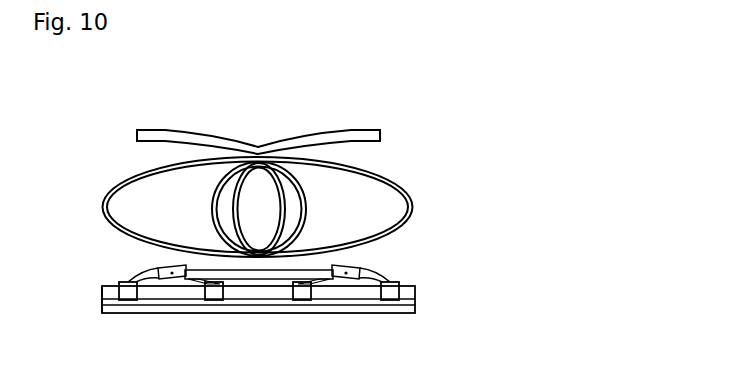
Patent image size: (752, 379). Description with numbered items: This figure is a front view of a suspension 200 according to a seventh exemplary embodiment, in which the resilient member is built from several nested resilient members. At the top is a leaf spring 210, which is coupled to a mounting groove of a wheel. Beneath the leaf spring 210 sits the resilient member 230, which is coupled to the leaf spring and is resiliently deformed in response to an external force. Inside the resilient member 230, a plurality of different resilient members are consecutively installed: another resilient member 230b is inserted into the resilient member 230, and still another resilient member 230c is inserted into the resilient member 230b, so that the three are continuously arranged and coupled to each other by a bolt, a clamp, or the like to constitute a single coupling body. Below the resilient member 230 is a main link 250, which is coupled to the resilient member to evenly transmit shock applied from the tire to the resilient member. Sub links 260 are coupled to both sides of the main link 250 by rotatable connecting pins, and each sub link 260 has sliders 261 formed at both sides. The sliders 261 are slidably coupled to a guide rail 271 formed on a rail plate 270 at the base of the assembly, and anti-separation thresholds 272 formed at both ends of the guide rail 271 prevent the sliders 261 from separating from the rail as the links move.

The suspension 200 is at (408, 106).
The leaf spring 210 is at (190, 142).
The resilient member 230 is at (124, 190).
The another resilient member 230b is at (242, 162).
The still another resilient member 230c is at (288, 162).
The main link 250 is at (255, 280).
The sub link 260 is at (131, 279).
The slider 261 is at (130, 298).
The rail plate 270 is at (194, 311).
The guide rail 271 is at (347, 293).
The anti-separation threshold 272 is at (112, 298).